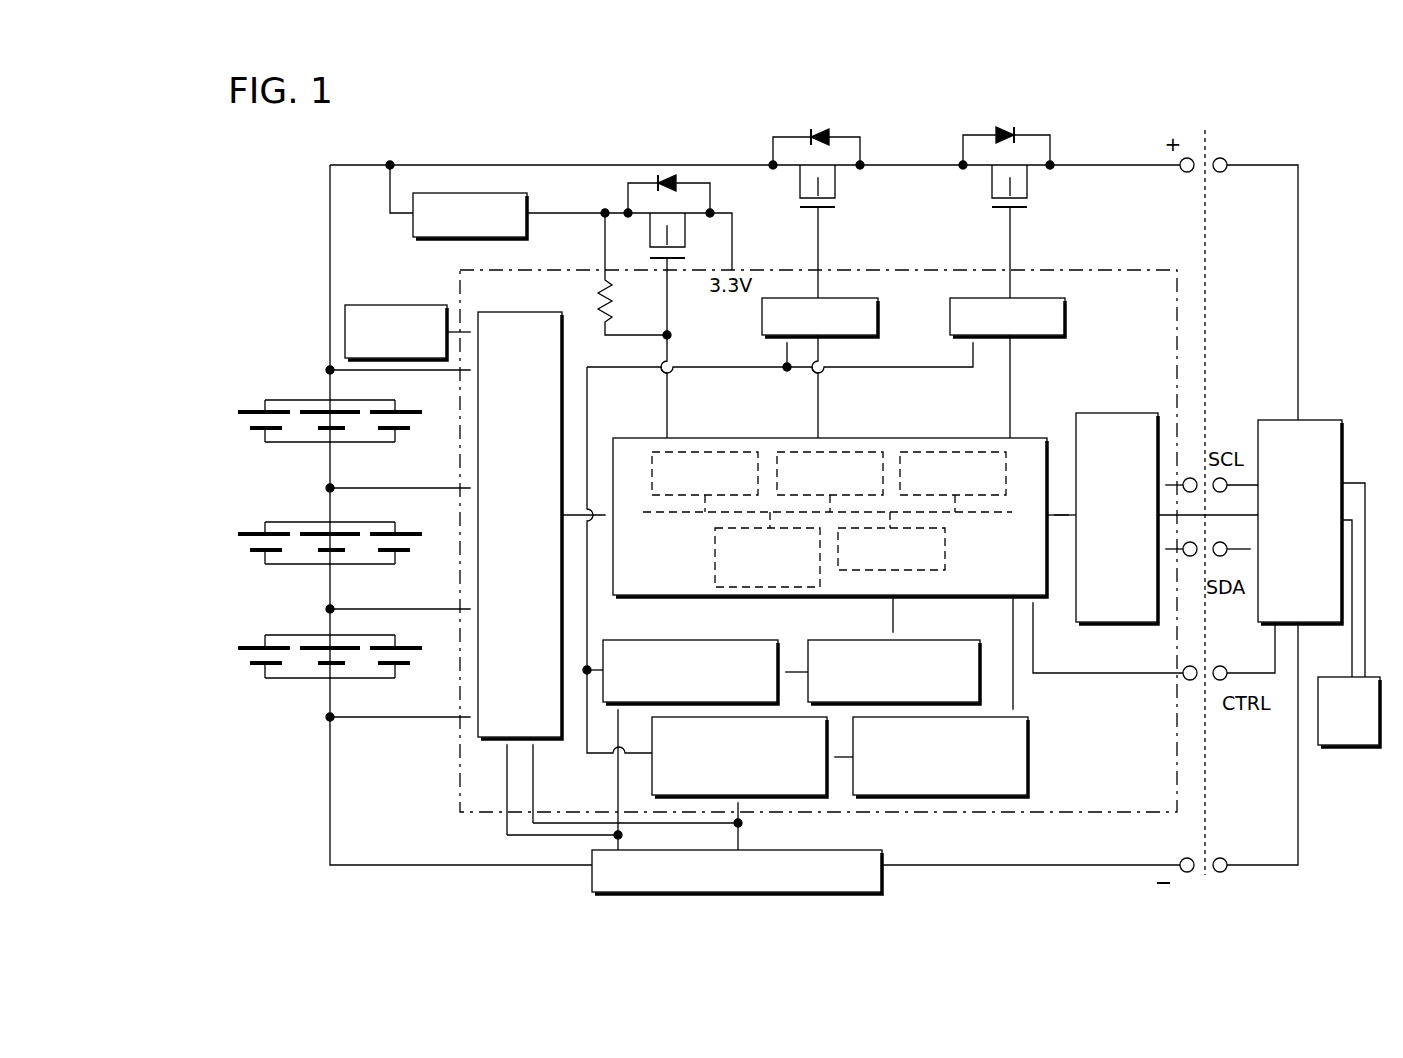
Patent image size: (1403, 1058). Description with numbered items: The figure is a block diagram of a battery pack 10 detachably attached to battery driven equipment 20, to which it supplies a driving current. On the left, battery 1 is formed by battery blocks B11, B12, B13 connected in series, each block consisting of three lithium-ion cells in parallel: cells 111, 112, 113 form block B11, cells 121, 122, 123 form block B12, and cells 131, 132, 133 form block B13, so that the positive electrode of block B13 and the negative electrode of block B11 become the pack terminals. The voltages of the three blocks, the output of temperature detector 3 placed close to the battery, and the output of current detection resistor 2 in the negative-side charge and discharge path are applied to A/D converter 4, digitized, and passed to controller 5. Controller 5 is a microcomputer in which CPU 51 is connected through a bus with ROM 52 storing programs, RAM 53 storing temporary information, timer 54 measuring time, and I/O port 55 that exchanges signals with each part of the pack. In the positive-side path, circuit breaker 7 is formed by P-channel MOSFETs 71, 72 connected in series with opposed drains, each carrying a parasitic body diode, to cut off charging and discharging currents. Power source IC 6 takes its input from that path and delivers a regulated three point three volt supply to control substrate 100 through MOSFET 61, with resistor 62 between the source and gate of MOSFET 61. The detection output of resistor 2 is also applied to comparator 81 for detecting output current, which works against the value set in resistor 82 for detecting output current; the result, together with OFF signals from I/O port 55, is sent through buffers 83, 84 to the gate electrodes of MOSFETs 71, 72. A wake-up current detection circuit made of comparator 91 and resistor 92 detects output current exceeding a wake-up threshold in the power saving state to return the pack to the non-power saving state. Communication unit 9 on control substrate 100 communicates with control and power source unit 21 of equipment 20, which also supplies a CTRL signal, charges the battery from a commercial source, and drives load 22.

The battery 1 is at (152, 347).
The battery block B11 is at (300, 667).
The battery block B12 is at (300, 541).
The battery block B13 is at (300, 416).
The battery cell 111 is at (255, 663).
The battery cell 112 is at (322, 668).
The battery cell 113 is at (402, 665).
The battery cell 121 is at (255, 550).
The battery cell 122 is at (322, 554).
The battery cell 123 is at (402, 552).
The battery cell 131 is at (255, 428).
The battery cell 132 is at (322, 432).
The battery cell 133 is at (402, 430).
The current detection resistor 2 is at (882, 855).
The temperature detector 3 is at (358, 305).
The A/D converter 4 is at (505, 310).
The controller 5 is at (830, 485).
The central processing unit 51 is at (965, 452).
The read-only memory 52 is at (850, 452).
The random access memory 53 is at (710, 452).
The timer 54 is at (945, 550).
The I/O port 55 is at (715, 560).
The power source IC 6 is at (448, 193).
The MOSFET 61 is at (686, 260).
The resistor 62 is at (603, 290).
The circuit breaker 7 is at (972, 82).
The MOSFET 71 is at (963, 152).
The MOSFET 72 is at (858, 152).
The comparator for detecting output current 81 is at (728, 640).
The resistor for detecting output current 82 is at (915, 640).
The buffer 83 is at (1040, 335).
The buffer 84 is at (858, 298).
The communication unit 9 is at (1128, 413).
The comparator for detecting wake-up current 91 is at (652, 775).
The resistor for detecting wake-up current 92 is at (1028, 762).
The battery pack 10 is at (1132, 148).
The control substrate 100 is at (1070, 268).
The battery driven equipment 20 is at (1320, 326).
The control and power source unit 21 is at (1318, 420).
The load 22 is at (1352, 745).